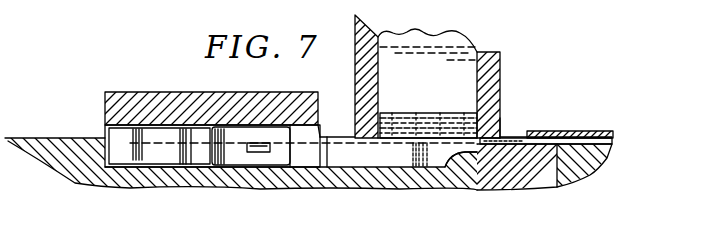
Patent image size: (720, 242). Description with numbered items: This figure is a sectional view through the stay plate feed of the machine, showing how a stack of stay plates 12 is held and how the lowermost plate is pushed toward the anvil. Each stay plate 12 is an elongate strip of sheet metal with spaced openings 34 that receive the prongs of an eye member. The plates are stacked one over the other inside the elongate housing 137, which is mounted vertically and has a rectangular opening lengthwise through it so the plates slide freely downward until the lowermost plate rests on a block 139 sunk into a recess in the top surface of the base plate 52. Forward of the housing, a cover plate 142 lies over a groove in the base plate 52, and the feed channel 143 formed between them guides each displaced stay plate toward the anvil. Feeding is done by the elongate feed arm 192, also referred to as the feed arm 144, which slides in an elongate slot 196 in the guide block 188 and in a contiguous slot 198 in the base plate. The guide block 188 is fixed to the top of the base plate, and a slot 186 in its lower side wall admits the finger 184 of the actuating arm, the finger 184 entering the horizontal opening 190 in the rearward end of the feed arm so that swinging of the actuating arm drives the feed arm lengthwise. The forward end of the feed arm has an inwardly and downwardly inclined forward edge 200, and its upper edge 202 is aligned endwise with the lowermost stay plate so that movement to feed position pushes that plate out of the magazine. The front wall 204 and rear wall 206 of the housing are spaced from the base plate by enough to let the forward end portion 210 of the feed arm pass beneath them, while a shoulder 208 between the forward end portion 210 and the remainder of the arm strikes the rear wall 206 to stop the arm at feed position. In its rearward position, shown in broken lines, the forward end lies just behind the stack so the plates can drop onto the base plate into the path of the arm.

The stay plate 12 is at (421, 110).
The openings 34 is at (393, 113).
The base plate 52 is at (598, 168).
The elongate housing 137 is at (434, 4).
The block 139 is at (527, 167).
The cover plate 142 is at (598, 131).
The feed channel 143 is at (612, 143).
The feed arm 144 is at (334, 120).
The finger 184 is at (265, 152).
The slot 186 is at (126, 176).
The guide block 188 is at (154, 90).
The opening 190 is at (245, 148).
The feed arm 192 is at (300, 153).
The elongate slot 196 is at (120, 130).
The slot 198 is at (118, 150).
The inclined forward edge 200 is at (372, 147).
The upper edge 202 is at (500, 118).
The front wall 204 is at (492, 72).
The rear wall 206 is at (367, 73).
The shoulder 208 is at (348, 134).
The forward end portion 210 is at (408, 156).